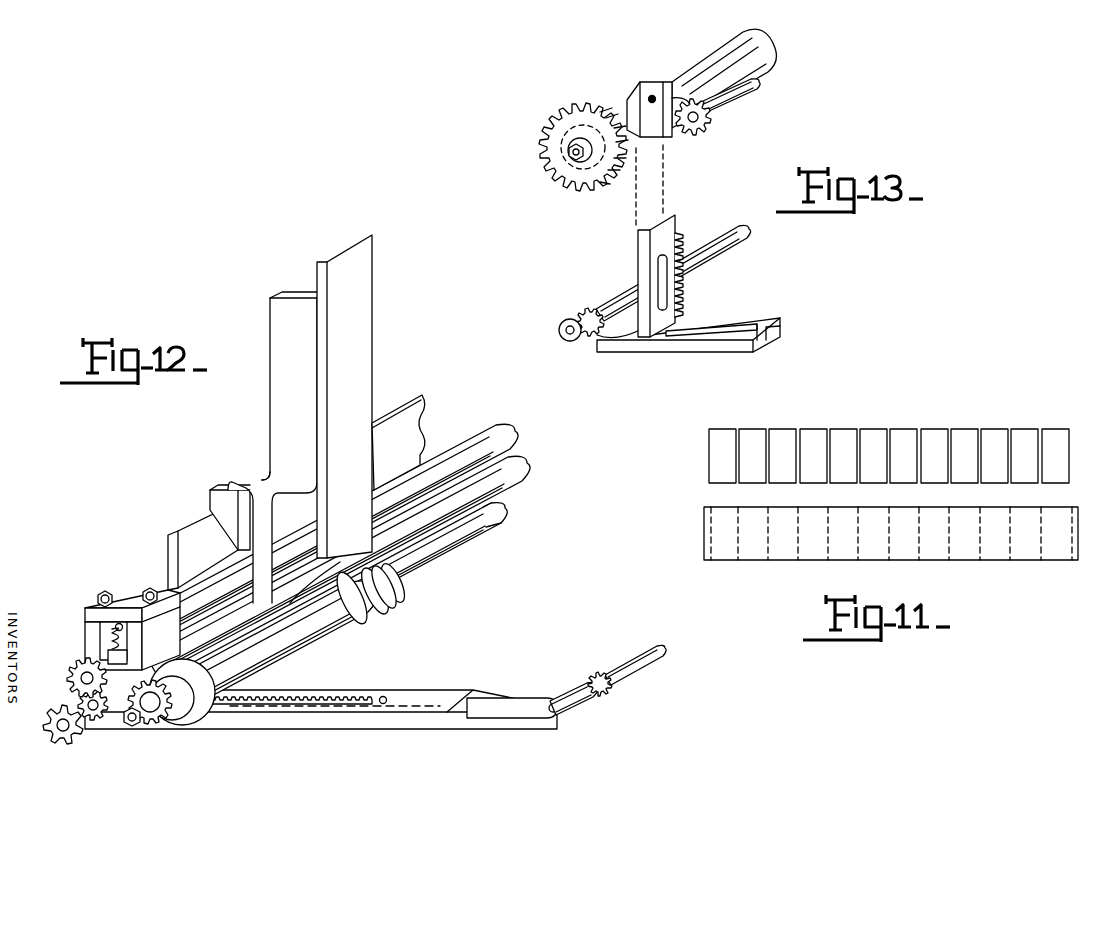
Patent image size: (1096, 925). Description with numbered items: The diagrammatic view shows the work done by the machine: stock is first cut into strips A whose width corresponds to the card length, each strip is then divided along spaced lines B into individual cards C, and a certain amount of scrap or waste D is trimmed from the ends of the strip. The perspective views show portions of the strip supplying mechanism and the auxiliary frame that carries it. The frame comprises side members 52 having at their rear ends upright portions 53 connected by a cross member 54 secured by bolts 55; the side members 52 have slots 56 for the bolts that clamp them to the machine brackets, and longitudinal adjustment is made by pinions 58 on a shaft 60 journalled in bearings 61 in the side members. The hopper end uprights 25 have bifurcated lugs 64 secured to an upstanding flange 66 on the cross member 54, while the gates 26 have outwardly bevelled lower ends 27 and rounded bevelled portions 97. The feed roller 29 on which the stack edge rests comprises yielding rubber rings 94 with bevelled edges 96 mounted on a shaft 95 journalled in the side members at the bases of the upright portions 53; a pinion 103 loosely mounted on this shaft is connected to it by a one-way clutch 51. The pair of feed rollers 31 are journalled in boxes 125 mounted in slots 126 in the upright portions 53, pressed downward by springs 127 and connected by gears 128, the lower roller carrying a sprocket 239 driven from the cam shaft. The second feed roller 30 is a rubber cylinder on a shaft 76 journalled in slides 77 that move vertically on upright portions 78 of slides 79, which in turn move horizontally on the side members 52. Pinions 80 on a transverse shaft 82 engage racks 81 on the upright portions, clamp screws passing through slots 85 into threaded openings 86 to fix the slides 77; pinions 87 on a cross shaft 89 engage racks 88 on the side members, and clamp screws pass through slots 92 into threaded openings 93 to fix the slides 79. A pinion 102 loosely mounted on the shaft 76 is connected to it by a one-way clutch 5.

In FIG. 12, the end uprights 25 is at (293, 310).
In FIG. 12, the gates 26 is at (352, 277).
In FIG. 12, the bevelled lower ends 27 is at (356, 553).
In FIG. 12, the feed roller 29 is at (398, 585).
In FIG. 12, the feed rollers 31 is at (468, 447).
In FIG. 12, the one-way clutch 51 is at (190, 722).
In FIG. 12, the side members 52 is at (411, 720).
In FIG. 12, the upright portions 53 is at (88, 634).
In FIG. 12, the cross member 54 is at (156, 580).
In FIG. 12, the bolts 55 is at (146, 595).
In FIG. 12, the slots 56 is at (503, 706).
In FIG. 12, the pinions 58 is at (601, 698).
In FIG. 12, the shaft 60 is at (637, 664).
In FIG. 12, the bearings 61 is at (574, 702).
In FIG. 12, the bifurcated lugs 64 is at (232, 490).
In FIG. 12, the upstanding flange 66 is at (170, 544).
In FIG. 12, the racks 88 is at (283, 695).
In FIG. 12, the threaded openings 93 is at (396, 691).
In FIG. 12, the rings 94 is at (384, 611).
In FIG. 12, the shaft 95 is at (487, 522).
In FIG. 12, the bevelled edges 96 is at (394, 586).
In FIG. 12, the bevelled portions 97 is at (340, 563).
In FIG. 12, the pinion 103 is at (158, 726).
In FIG. 12, the boxes 125 is at (122, 668).
In FIG. 12, the slots 126 is at (110, 645).
In FIG. 12, the springs 127 is at (116, 627).
In FIG. 12, the gears 128 is at (68, 686).
In FIG. 12, the sprocket 239 is at (63, 746).
In FIG. 13, the one-way clutch 5 is at (633, 102).
In FIG. 13, the feed roller 30 is at (718, 55).
In FIG. 13, the shaft 76 is at (567, 113).
In FIG. 13, the slides 77 is at (637, 97).
In FIG. 13, the upright portions 78 is at (640, 242).
In FIG. 13, the slides 79 is at (670, 347).
In FIG. 13, the pinions 80 is at (693, 134).
In FIG. 13, the racks 81 is at (690, 284).
In FIG. 13, the transverse shaft 82 is at (733, 95).
In FIG. 13, the slots 85 is at (660, 270).
In FIG. 13, the threaded openings 86 is at (652, 95).
In FIG. 13, the pinions 87 is at (577, 311).
In FIG. 13, the cross shaft 89 is at (717, 245).
In FIG. 13, the slots 92 is at (740, 326).
In FIG. 13, the pinion 102 is at (562, 145).
In FIG. 11, the strips A is at (1022, 558).
In FIG. 11, the lines B is at (922, 432).
In FIG. 11, the individual cards C is at (785, 440).
In FIG. 11, the scrap or waste D is at (704, 540).